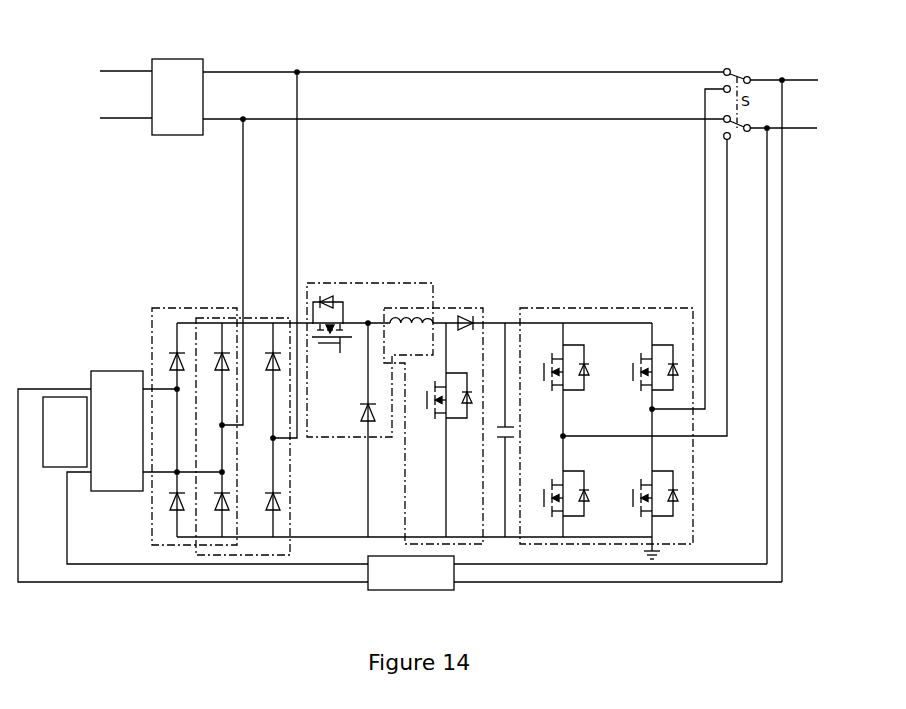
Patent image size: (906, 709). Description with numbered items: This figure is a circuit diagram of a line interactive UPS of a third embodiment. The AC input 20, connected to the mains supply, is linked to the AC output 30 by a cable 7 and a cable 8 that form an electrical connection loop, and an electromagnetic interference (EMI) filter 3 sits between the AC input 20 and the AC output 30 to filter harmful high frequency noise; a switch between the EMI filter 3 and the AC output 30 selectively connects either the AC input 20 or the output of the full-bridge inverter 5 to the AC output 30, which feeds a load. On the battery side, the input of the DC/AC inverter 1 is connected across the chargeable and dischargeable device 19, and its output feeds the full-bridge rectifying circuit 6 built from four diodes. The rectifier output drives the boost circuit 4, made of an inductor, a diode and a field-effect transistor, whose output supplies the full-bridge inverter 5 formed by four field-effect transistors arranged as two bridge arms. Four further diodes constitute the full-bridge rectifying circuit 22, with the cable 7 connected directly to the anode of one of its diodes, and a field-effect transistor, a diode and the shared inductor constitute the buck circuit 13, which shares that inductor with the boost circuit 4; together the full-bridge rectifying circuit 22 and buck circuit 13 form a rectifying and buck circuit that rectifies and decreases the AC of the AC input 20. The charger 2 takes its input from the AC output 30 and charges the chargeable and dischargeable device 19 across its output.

The DC/AC inverter 1 is at (124, 371).
The charger 2 is at (412, 590).
The electromagnetic interference (EMI) filter 3 is at (176, 59).
The boost circuit 4 is at (458, 308).
The full-bridge inverter 5 is at (608, 308).
The full-bridge rectifying circuit 6 is at (185, 308).
The cable 7 is at (498, 72).
The cable 8 is at (498, 119).
The buck circuit 13 is at (370, 283).
The chargeable and dischargeable device 19 is at (61, 468).
The AC input 20 is at (118, 94).
The full-bridge rectifying circuit 22 is at (260, 318).
The AC output 30 is at (787, 104).